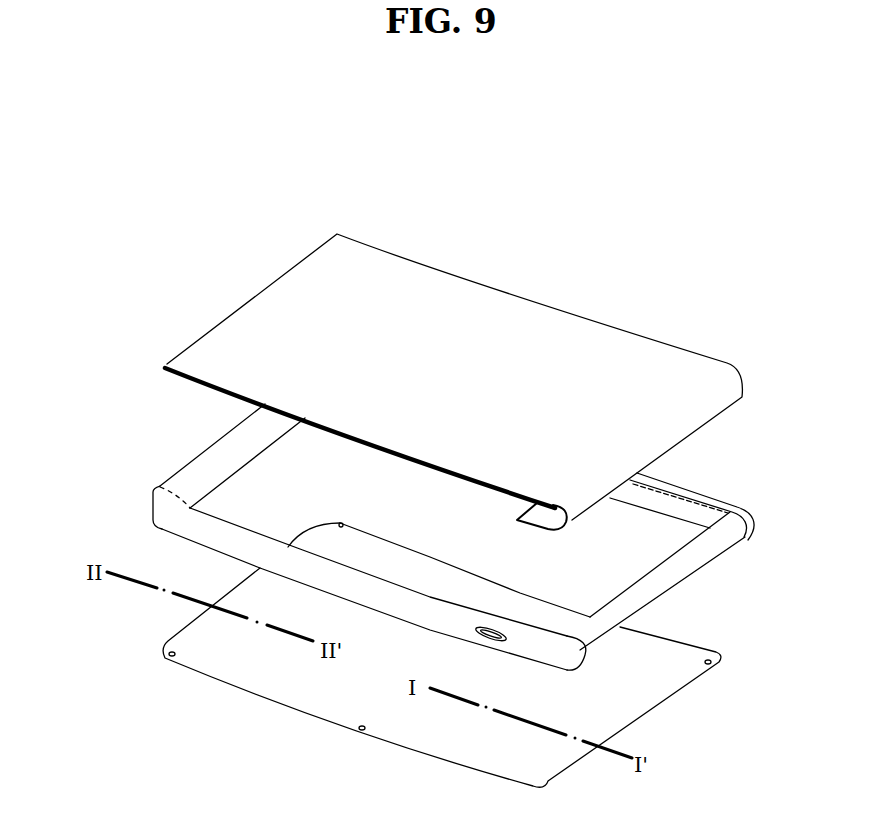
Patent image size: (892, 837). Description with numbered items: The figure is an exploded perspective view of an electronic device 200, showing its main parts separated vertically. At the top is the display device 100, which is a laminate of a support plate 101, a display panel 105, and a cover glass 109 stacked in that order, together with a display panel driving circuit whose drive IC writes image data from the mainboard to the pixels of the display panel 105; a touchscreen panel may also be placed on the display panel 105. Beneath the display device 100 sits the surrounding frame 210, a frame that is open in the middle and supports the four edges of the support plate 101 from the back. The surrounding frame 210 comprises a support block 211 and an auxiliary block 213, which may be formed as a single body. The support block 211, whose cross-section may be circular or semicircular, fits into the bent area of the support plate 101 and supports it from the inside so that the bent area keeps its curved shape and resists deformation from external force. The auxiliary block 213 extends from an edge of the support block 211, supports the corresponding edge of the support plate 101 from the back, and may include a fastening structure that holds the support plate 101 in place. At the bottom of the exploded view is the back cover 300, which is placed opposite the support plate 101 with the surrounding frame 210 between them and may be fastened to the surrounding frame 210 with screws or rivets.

The electronic device 200 is at (131, 138).
The display device 100 is at (86, 303).
The cover glass 109 is at (165, 363).
The display panel 105 is at (162, 369).
The support plate 101 is at (163, 377).
The surrounding frame 210 is at (779, 453).
The support block 211 is at (697, 563).
The auxiliary block 213 is at (697, 503).
The back cover 300 is at (643, 715).